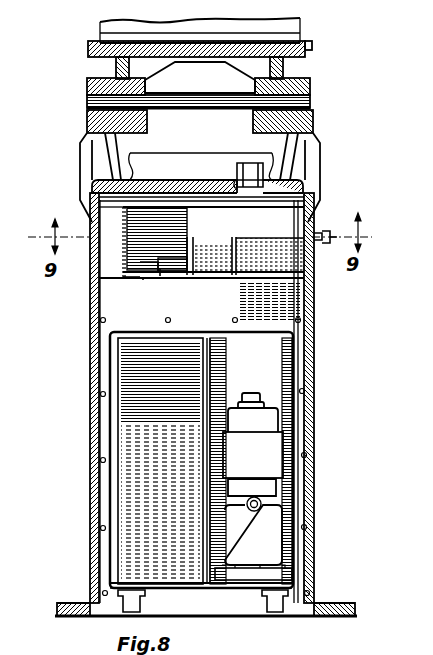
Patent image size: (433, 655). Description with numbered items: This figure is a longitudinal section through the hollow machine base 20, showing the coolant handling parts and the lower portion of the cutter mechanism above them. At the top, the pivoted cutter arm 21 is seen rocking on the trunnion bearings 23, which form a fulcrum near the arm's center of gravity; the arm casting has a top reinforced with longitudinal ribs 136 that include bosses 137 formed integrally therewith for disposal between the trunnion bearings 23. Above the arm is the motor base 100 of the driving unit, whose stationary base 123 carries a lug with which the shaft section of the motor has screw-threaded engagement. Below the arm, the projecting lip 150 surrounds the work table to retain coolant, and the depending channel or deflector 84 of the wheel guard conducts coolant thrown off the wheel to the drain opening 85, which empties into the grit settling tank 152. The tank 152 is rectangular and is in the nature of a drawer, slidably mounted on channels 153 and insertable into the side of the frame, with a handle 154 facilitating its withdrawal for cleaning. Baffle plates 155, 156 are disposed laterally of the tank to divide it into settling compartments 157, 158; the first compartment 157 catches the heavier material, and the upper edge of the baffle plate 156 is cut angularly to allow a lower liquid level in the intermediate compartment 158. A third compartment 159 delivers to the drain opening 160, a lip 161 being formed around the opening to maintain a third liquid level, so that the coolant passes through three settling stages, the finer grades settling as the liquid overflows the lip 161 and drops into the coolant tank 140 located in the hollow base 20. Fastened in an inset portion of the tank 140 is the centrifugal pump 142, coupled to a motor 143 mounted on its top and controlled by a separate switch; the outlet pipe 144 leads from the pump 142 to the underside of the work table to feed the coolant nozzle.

The motor base 100 is at (184, 29).
The stationary base 123 is at (135, 38).
The outlet pipe 144 is at (262, 8).
The cutter arm 21 is at (313, 46).
The longitudinal ribs 136 is at (114, 67).
The bosses 137 is at (255, 82).
The trunnion bearings 23 is at (150, 126).
The projecting lip 150 is at (191, 161).
The depending channel or deflector 84 is at (250, 164).
The drain opening 85 is at (236, 182).
The grit settling tank 152 is at (308, 216).
The baffle plate 156 is at (172, 248).
The baffle plate 155 is at (236, 244).
The third compartment 159 is at (168, 272).
The intermediate compartment 158 is at (203, 265).
The channels 153 is at (117, 278).
The drain opening 160 is at (143, 278).
The lip 161 is at (152, 280).
The first settling compartment 157 is at (265, 258).
The handle 154 is at (323, 242).
The base 20 is at (315, 345).
The coolant tank 140 is at (284, 425).
The motor 143 is at (272, 462).
The pump 142 is at (268, 516).